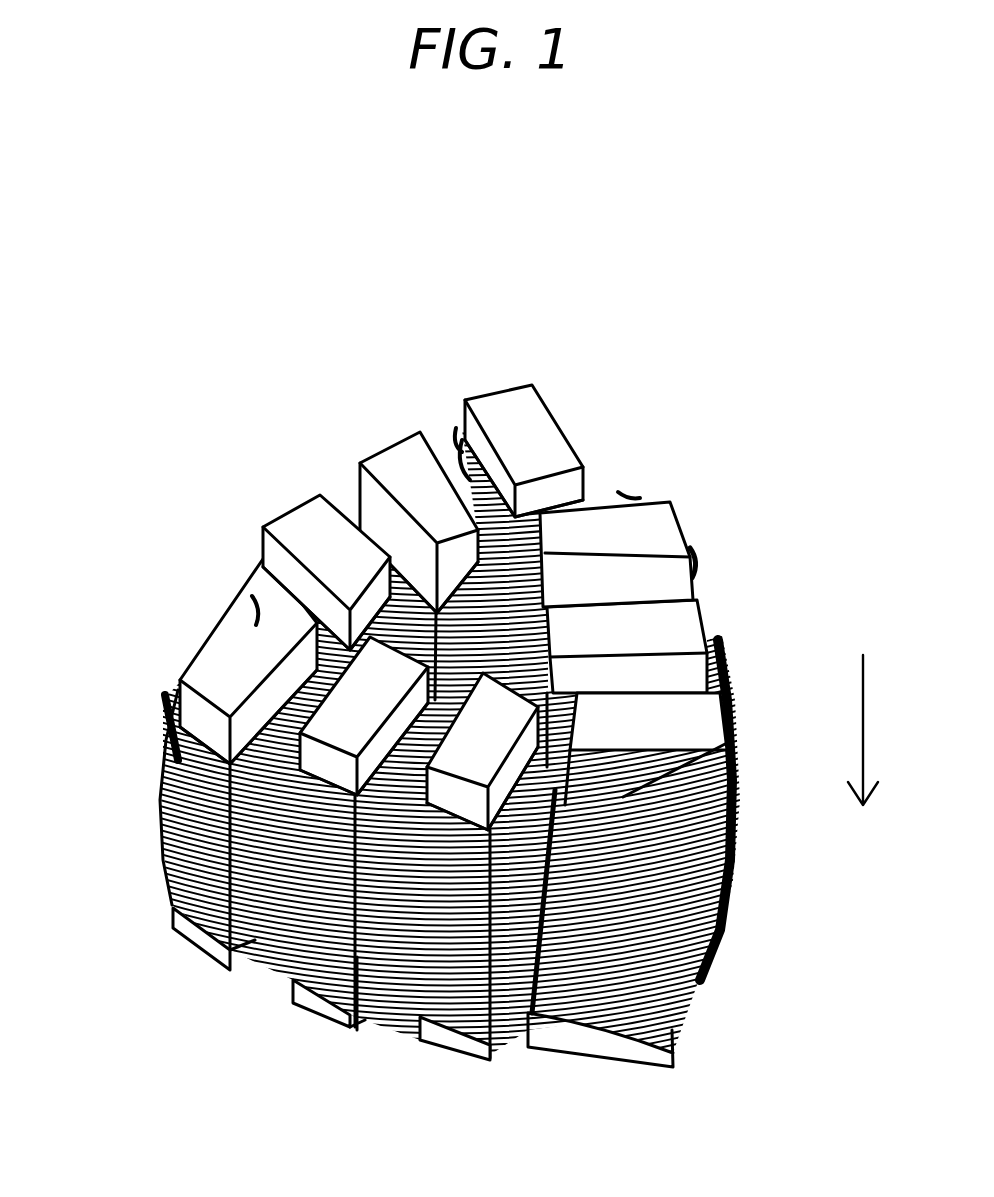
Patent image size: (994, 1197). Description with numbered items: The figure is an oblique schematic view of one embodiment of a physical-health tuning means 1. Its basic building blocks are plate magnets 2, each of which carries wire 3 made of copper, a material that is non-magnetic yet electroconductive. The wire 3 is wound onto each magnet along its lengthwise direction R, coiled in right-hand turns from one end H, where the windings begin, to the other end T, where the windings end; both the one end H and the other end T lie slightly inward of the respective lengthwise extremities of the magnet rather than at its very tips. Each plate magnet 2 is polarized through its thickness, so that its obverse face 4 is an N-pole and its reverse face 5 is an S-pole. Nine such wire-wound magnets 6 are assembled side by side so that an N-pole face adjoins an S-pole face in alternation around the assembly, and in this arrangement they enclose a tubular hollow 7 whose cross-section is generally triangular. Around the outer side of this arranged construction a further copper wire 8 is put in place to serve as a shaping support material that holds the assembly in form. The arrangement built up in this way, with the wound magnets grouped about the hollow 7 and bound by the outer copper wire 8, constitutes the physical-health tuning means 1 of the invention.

The physical-health tuning means 1 is at (664, 413).
The plate magnets 2 is at (498, 405).
The wire 3 is at (470, 467).
The obverse faces 4 is at (555, 417).
The reverse faces 5 is at (625, 497).
The wire-wound magnets 6 is at (357, 507).
The tubular hollow 7 is at (390, 452).
The copper wire 8 is at (160, 797).
The one end H is at (180, 680).
The other end T is at (172, 907).
The lengthwise direction R is at (881, 730).